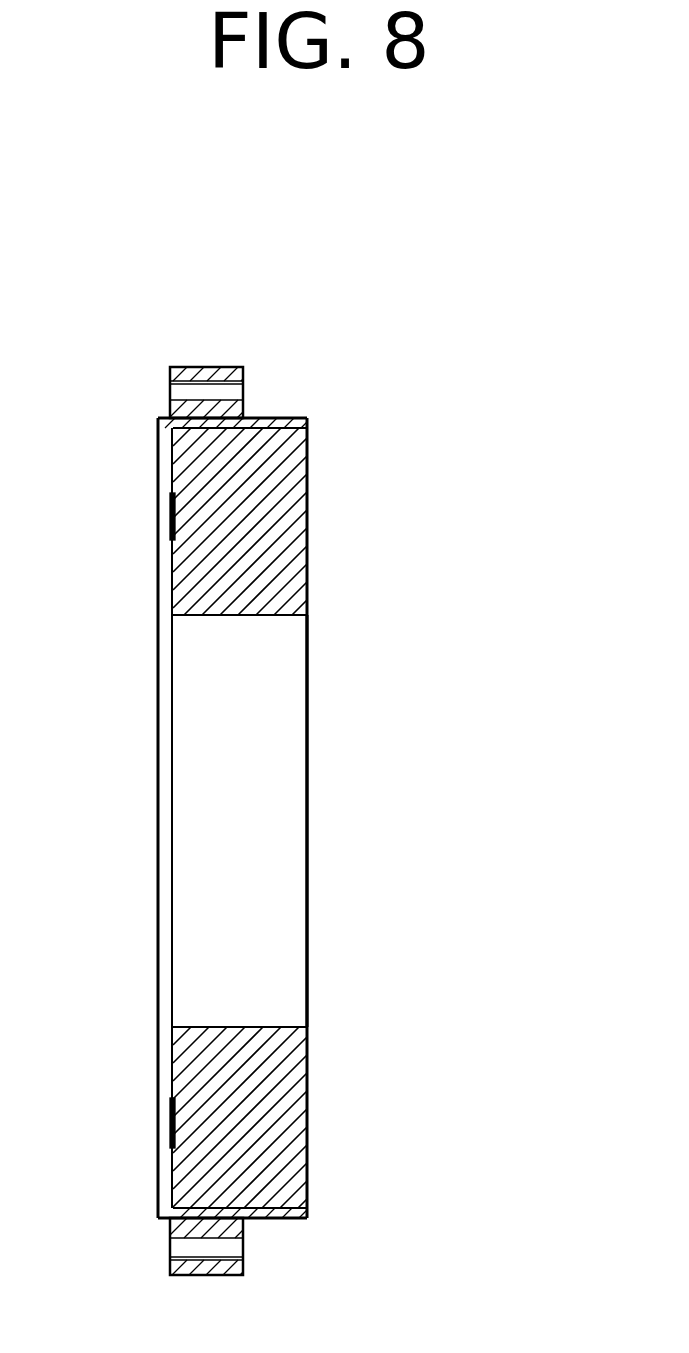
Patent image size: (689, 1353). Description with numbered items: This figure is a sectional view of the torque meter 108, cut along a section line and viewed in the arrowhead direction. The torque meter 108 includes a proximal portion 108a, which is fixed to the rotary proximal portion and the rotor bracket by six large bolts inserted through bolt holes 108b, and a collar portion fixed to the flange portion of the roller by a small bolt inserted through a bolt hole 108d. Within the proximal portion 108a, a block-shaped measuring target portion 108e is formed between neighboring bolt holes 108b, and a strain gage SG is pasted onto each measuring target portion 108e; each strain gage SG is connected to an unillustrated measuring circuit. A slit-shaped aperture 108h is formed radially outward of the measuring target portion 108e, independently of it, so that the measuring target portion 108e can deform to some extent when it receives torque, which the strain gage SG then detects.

The torque meter 108 is at (352, 376).
The bolt hole 108b is at (200, 367).
The bolt hole 108d is at (244, 396).
The slit-shaped aperture 108h is at (308, 427).
The measuring target portion 108e is at (307, 543).
The proximal portion 108a is at (247, 617).
The strain gage SG is at (170, 524).